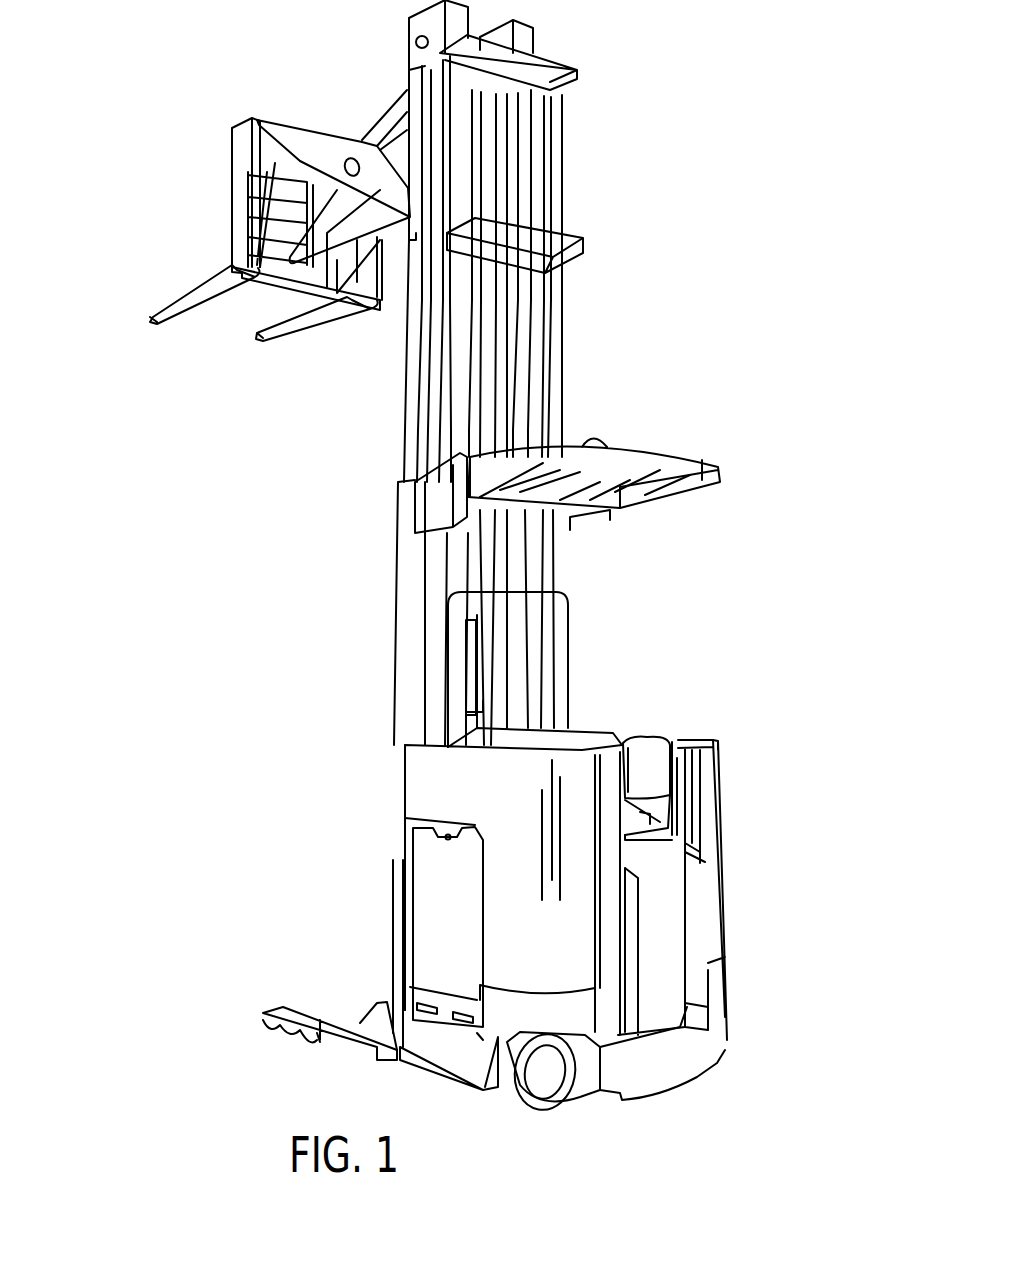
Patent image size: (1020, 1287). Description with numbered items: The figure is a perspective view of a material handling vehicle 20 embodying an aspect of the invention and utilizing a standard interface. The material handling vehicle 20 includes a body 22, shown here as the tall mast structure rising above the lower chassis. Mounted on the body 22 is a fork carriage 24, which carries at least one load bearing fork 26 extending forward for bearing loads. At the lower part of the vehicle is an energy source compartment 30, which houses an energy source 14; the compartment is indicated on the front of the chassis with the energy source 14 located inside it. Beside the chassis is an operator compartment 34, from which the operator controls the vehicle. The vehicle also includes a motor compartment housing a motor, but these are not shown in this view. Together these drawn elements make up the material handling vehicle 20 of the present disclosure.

The energy source 14 is at (430, 908).
The material handling vehicle 20 is at (690, 405).
The body 22 is at (306, 652).
The fork carriage 24 is at (178, 253).
The load bearing fork 26 is at (188, 305).
The energy source compartment 30 is at (425, 830).
The operator compartment 34 is at (605, 712).